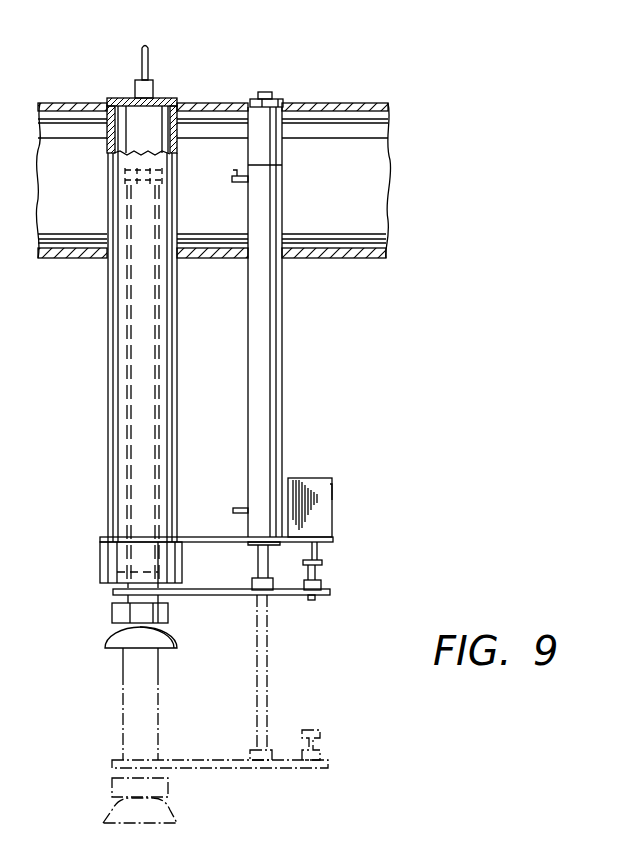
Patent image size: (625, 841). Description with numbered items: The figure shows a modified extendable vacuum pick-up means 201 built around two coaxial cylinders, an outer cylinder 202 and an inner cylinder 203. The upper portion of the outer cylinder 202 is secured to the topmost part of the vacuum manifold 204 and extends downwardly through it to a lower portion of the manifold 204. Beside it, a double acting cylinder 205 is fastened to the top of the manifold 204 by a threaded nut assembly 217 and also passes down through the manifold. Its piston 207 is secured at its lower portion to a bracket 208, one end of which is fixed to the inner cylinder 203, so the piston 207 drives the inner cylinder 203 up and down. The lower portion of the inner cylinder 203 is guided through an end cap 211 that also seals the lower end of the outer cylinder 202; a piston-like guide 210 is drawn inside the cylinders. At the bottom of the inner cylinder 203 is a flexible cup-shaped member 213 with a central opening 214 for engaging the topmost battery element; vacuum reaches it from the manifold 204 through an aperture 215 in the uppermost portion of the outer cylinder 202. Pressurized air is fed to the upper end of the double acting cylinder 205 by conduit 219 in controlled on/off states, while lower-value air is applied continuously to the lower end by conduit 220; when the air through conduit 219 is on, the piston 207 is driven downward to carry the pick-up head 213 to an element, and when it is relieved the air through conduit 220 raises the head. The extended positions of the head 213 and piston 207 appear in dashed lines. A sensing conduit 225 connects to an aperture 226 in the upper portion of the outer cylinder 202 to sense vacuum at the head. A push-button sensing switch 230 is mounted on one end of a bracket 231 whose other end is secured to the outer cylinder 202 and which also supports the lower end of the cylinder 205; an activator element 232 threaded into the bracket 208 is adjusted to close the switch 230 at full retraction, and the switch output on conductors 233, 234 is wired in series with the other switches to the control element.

The pick-up means 201 is at (287, 355).
The outer cylinder 202 is at (108, 297).
The inner cylinder 203 is at (127, 382).
The vacuum manifold 204 is at (343, 103).
The double acting cylinder 205 is at (278, 428).
The piston 207 is at (256, 562).
The bracket 208 is at (238, 596).
The piston 210 is at (125, 187).
The end cap 211 is at (100, 562).
The flexible cup-shaped member 213 is at (112, 636).
The central opening 214 is at (145, 648).
The aperture 215 is at (107, 135).
The threaded nut assembly 217 is at (273, 93).
The conduit 219 is at (233, 176).
The conduit 220 is at (238, 508).
The conduit 225 is at (148, 56).
The aperture 226 is at (147, 107).
The push-button type sensing switch 230 is at (328, 512).
The bracket 231 is at (185, 537).
The activator element 232 is at (322, 573).
The conductor 233 is at (330, 482).
The conductor 234 is at (332, 495).